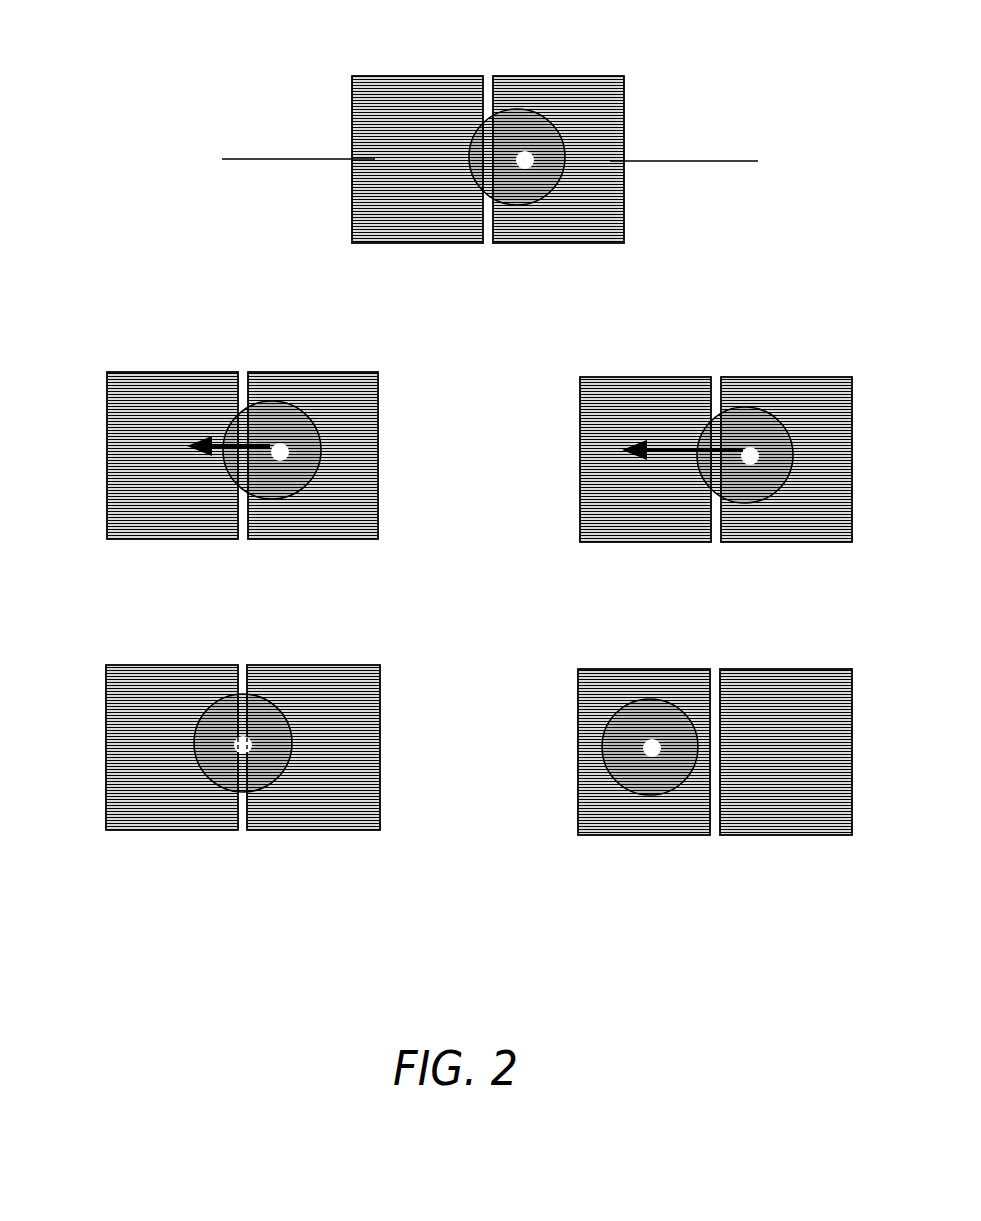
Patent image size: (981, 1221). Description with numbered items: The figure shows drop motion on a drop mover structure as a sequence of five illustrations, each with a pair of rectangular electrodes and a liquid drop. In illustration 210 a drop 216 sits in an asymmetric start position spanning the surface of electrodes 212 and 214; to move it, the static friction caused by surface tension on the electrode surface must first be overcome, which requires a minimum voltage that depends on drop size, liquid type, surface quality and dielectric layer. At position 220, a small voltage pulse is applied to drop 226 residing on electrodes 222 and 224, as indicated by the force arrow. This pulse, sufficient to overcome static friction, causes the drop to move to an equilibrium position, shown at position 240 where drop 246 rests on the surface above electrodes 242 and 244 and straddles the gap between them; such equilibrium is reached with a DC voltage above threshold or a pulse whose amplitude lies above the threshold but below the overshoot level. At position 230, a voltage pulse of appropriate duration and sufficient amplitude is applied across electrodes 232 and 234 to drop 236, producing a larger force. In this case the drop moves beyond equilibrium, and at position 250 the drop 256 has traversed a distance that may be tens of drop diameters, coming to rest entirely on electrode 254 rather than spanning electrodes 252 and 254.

The illustration 210 is at (327, 84).
The electrode 212 is at (556, 76).
The electrode 214 is at (410, 76).
The drop 216 is at (557, 138).
The position 220 is at (119, 346).
The electrode 222 is at (302, 372).
The electrode 224 is at (173, 372).
The drop 226 is at (320, 437).
The position 230 is at (565, 391).
The electrode 232 is at (780, 377).
The electrode 234 is at (650, 377).
The drop 236 is at (793, 447).
The position 240 is at (118, 641).
The electrode 242 is at (302, 665).
The electrode 244 is at (172, 665).
The drop 246 is at (292, 735).
The position 250 is at (589, 646).
The electrode 252 is at (778, 669).
The electrode 254 is at (648, 669).
The drop 256 is at (605, 740).